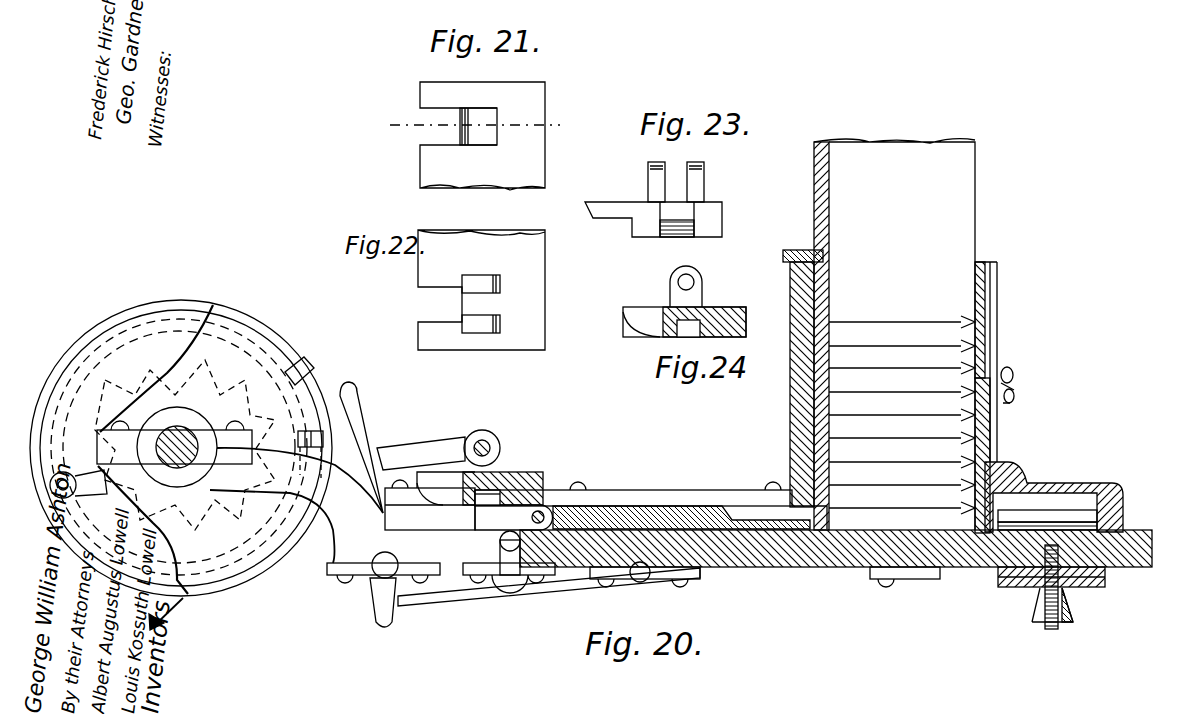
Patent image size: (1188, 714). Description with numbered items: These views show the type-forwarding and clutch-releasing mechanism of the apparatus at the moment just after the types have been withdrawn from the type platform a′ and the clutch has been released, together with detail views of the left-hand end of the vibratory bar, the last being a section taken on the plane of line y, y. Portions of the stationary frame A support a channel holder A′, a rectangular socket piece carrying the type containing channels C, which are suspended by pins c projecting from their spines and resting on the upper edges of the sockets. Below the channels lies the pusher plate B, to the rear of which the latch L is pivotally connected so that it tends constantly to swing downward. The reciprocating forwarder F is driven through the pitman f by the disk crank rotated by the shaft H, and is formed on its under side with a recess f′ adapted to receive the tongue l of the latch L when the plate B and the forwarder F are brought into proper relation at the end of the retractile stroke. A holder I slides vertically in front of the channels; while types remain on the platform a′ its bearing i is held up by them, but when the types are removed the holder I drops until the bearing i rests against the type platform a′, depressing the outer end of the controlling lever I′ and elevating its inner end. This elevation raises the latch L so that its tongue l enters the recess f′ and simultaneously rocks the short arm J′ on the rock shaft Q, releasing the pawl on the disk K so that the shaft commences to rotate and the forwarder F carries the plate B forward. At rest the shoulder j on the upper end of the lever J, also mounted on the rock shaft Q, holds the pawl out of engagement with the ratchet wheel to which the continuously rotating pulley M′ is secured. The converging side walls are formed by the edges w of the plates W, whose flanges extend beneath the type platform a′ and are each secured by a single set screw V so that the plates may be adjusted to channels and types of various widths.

In FIG. 20, the disk K is at (206, 465).
In FIG. 20, the shaft H is at (151, 452).
In FIG. 20, the pulley M′ is at (258, 437).
In FIG. 20, the lever J is at (361, 447).
In FIG. 20, the shoulder j is at (358, 385).
In FIG. 20, the pitman f is at (416, 455).
In FIG. 20, the tongue l is at (430, 502).
In FIG. 20, the latch L is at (482, 496).
In FIG. 20, the reciprocating forwarder F is at (503, 477).
In FIG. 21, the reciprocating forwarder F is at (482, 136).
In FIG. 22, the reciprocating forwarder F is at (481, 290).
In FIG. 23, the reciprocating forwarder F is at (653, 199).
In FIG. 24, the reciprocating forwarder F is at (684, 301).
In FIG. 20, the recess f′ is at (497, 489).
In FIG. 21, the recess f′ is at (478, 126).
In FIG. 24, the recess f′ is at (688, 336).
In FIG. 20, the pusher plate B is at (675, 506).
In FIG. 20, the stationary frame A is at (836, 560).
In FIG. 20, the controlling lever I′ is at (633, 589).
In FIG. 20, the rock shaft Q is at (380, 570).
In FIG. 20, the short arm J′ is at (382, 602).
In FIG. 20, the channel holder A′ is at (789, 384).
In FIG. 20, the pin c is at (803, 247).
In FIG. 20, the type containing channel C is at (894, 334).
In FIG. 20, the wing nut rod W′ is at (1012, 368).
In FIG. 20, the holder I is at (1054, 495).
In FIG. 20, the edge of plate W w is at (1047, 516).
In FIG. 20, the bearing i is at (1130, 503).
In FIG. 20, the type platform a′ is at (1136, 525).
In FIG. 20, the plate W is at (1040, 579).
In FIG. 20, the set screw V is at (1040, 600).
In FIG. 21, the section line y is at (468, 125).